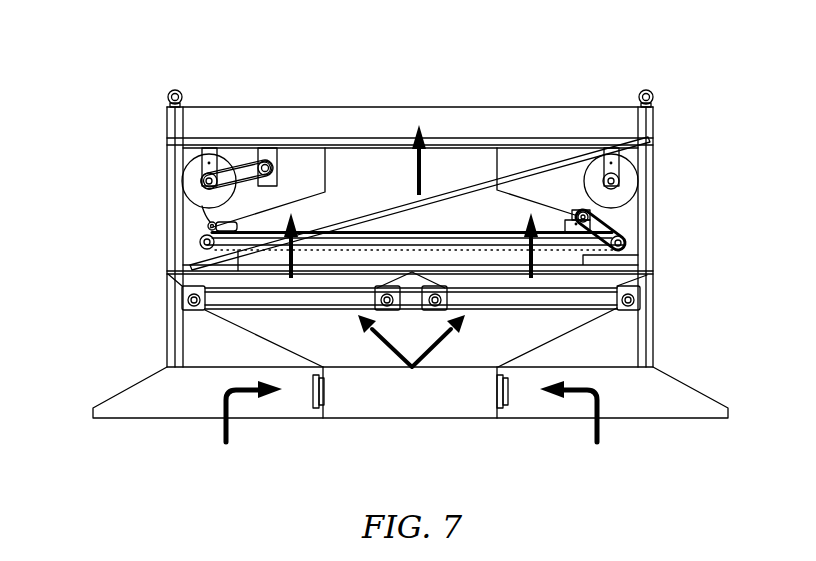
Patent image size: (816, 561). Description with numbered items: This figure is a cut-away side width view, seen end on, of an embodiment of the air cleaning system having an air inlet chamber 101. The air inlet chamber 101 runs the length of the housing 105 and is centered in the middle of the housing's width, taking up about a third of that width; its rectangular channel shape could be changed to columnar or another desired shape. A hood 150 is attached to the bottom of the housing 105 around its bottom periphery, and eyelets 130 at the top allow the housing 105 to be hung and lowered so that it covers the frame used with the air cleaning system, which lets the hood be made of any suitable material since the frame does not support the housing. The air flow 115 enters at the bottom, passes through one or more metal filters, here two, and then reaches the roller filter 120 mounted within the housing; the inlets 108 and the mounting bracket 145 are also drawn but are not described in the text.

The air inlet chamber 101 is at (382, 402).
The housing 105 is at (648, 330).
The air inlet 108 is at (313, 393).
The air flow 115 is at (417, 177).
The roller filter 120 is at (232, 212).
The eyelets 130 is at (176, 90).
The mounting bracket bar 145 is at (247, 300).
The hood 150 is at (128, 387).